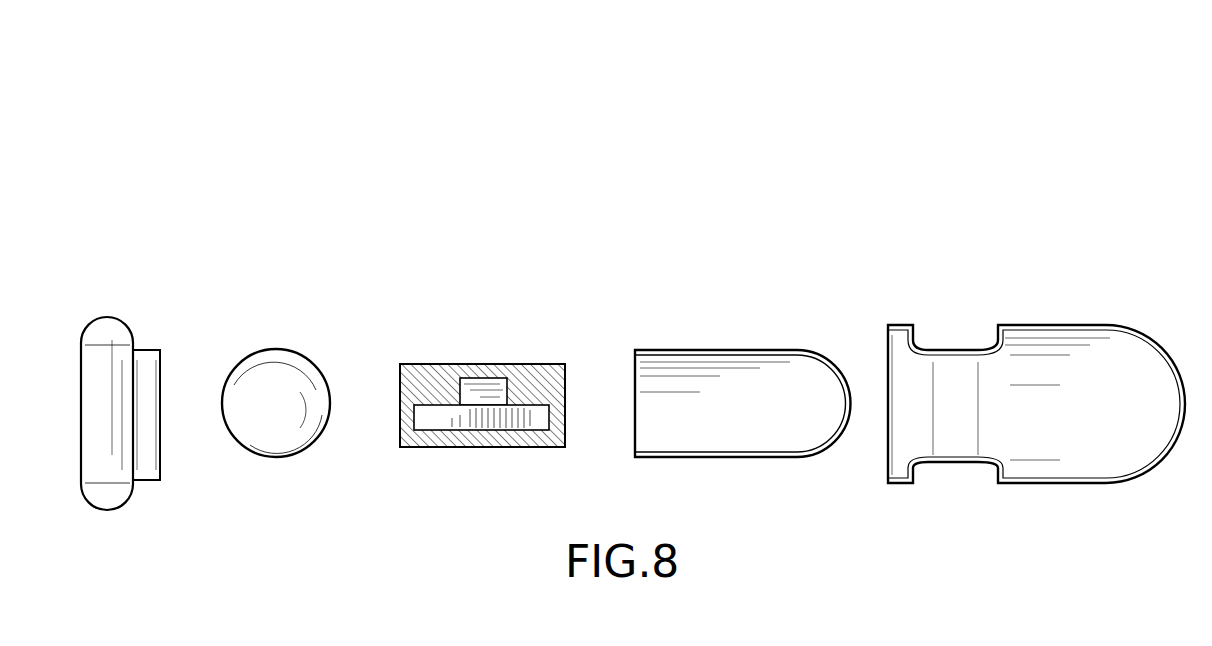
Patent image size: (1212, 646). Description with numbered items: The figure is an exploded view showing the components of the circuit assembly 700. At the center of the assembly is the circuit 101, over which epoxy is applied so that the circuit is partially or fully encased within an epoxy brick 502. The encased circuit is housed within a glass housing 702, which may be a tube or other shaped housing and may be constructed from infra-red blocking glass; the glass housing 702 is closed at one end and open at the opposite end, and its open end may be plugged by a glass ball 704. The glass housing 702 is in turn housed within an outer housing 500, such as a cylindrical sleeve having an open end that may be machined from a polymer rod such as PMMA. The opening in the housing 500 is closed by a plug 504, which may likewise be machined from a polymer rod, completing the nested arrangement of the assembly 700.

The circuit assembly 700 is at (121, 121).
The plug 504 is at (119, 317).
The glass ball 704 is at (288, 348).
The epoxy brick 502 is at (475, 362).
The circuit 101 is at (467, 418).
The glass housing 702 is at (705, 348).
The housing 500 is at (1015, 325).